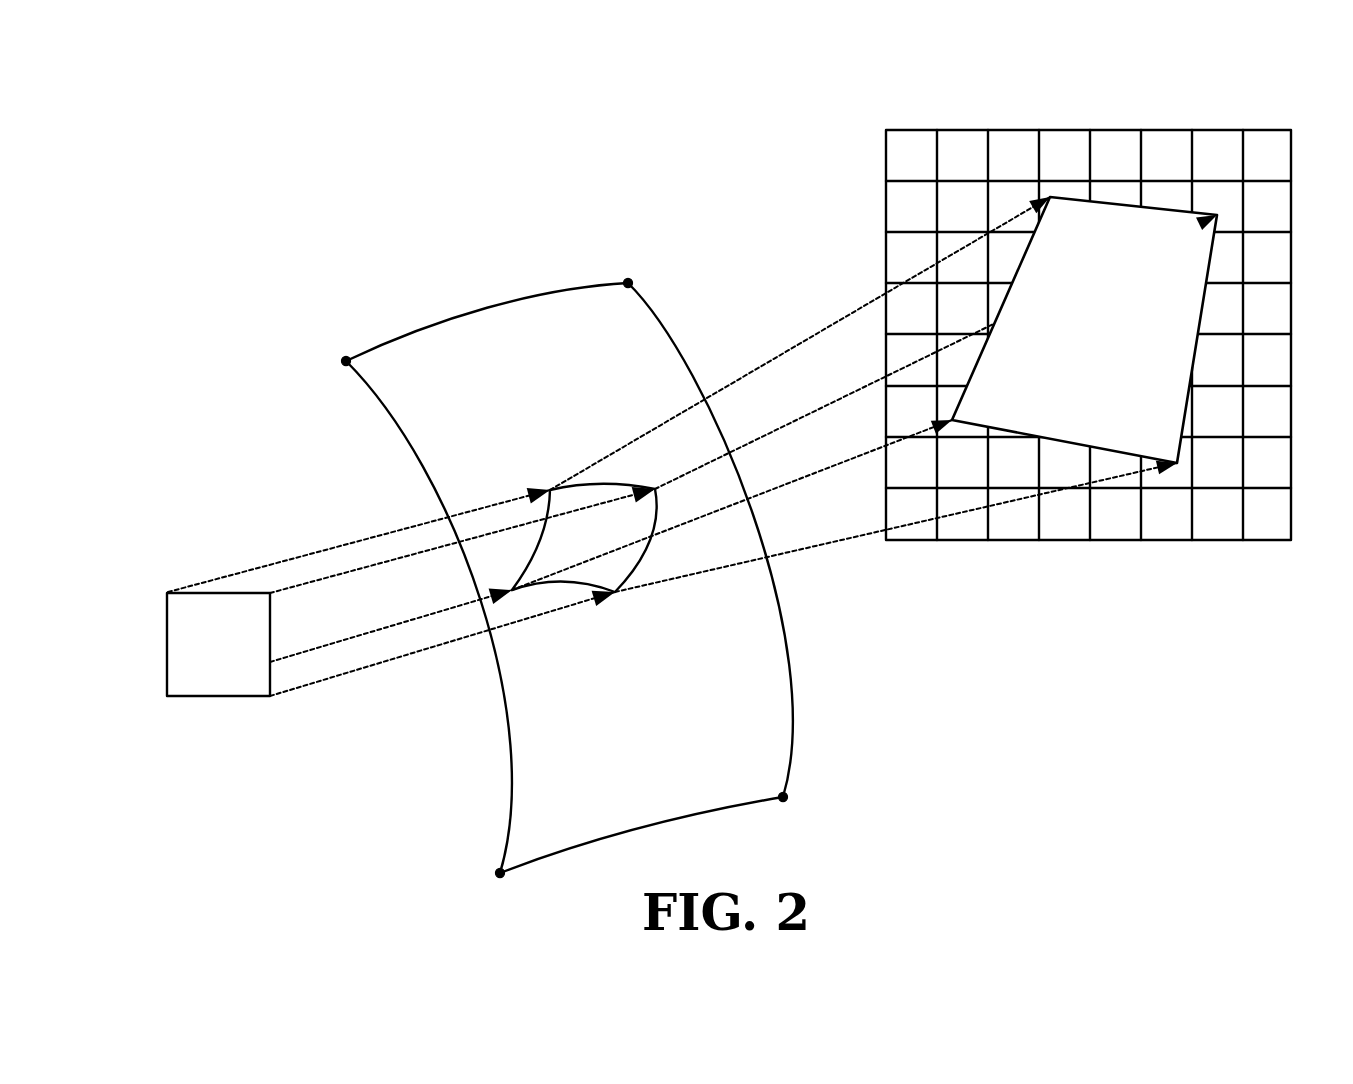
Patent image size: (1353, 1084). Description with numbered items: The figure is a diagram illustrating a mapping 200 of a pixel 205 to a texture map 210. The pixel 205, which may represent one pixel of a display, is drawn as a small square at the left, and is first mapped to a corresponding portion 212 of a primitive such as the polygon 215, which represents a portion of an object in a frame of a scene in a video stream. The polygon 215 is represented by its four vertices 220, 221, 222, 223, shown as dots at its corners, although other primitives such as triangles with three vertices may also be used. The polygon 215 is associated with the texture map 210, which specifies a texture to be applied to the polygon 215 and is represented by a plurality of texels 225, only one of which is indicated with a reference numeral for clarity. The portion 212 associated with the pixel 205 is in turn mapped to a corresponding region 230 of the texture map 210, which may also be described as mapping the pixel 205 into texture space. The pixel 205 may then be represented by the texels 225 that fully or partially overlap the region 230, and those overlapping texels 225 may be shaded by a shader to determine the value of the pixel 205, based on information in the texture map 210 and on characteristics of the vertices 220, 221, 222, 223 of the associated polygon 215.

The mapping 200 is at (233, 143).
The pixel 205 is at (167, 643).
The texture map 210 is at (833, 182).
The portion of a primitive 212 is at (540, 500).
The polygon 215 is at (525, 293).
The vertex 220 is at (346, 361).
The vertex 221 is at (628, 283).
The vertex 222 is at (782, 805).
The vertex 223 is at (499, 881).
The texel 225 is at (1118, 542).
The region of the texture map 230 is at (1115, 200).